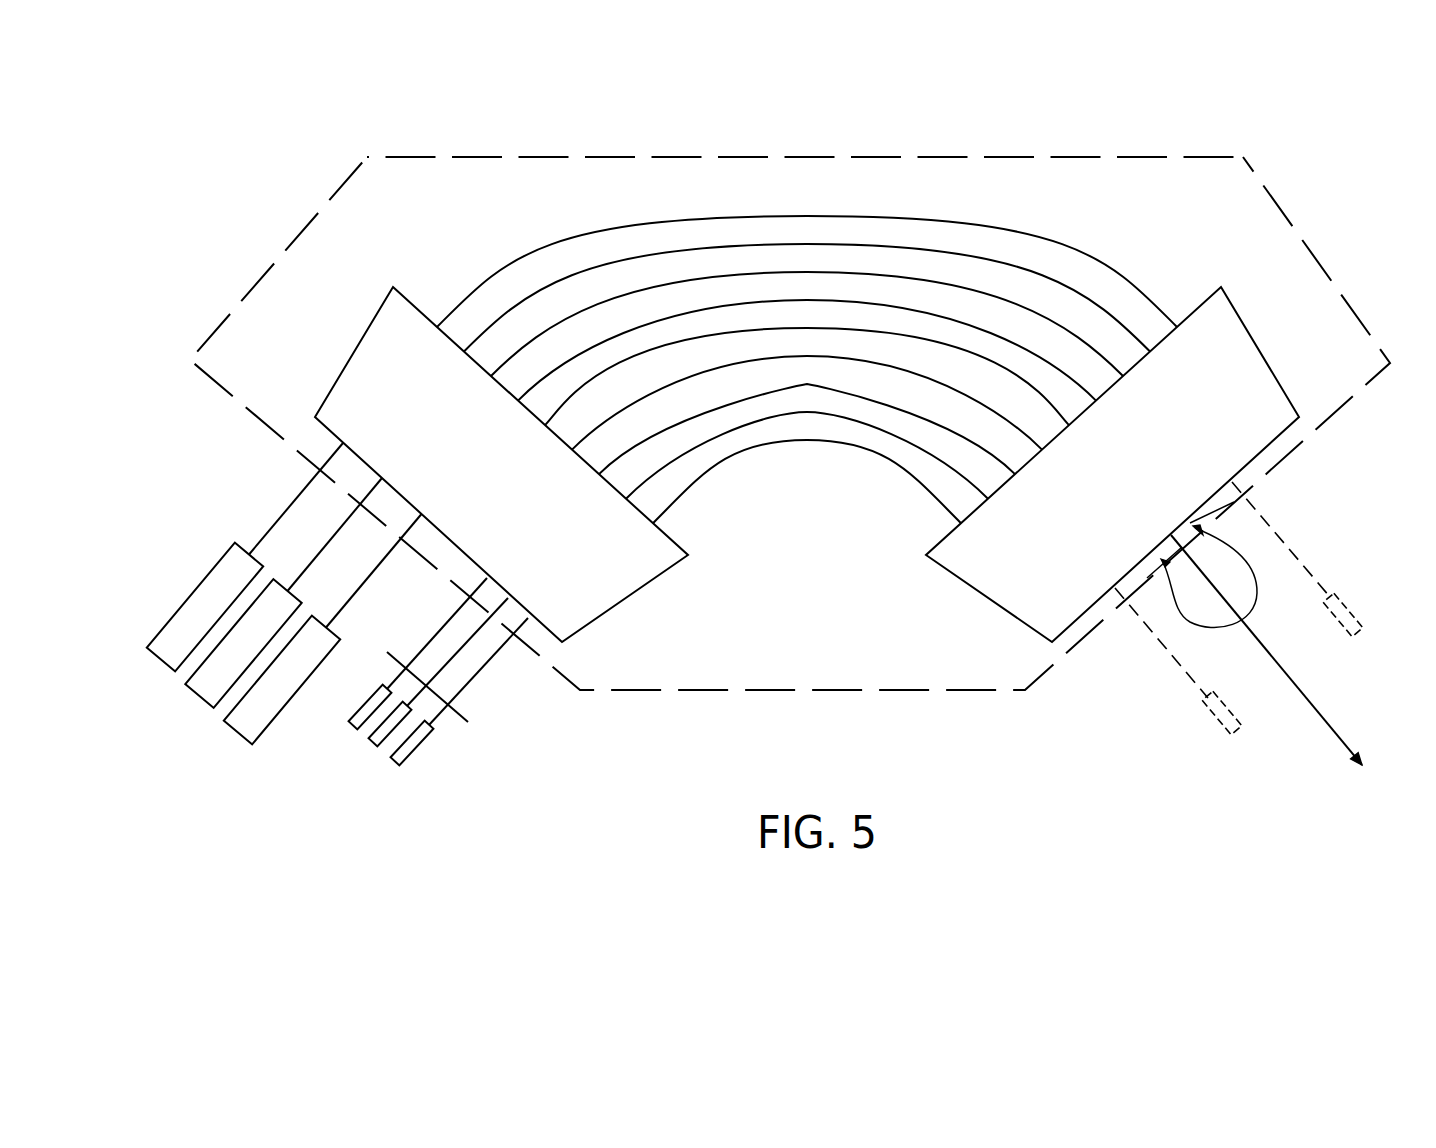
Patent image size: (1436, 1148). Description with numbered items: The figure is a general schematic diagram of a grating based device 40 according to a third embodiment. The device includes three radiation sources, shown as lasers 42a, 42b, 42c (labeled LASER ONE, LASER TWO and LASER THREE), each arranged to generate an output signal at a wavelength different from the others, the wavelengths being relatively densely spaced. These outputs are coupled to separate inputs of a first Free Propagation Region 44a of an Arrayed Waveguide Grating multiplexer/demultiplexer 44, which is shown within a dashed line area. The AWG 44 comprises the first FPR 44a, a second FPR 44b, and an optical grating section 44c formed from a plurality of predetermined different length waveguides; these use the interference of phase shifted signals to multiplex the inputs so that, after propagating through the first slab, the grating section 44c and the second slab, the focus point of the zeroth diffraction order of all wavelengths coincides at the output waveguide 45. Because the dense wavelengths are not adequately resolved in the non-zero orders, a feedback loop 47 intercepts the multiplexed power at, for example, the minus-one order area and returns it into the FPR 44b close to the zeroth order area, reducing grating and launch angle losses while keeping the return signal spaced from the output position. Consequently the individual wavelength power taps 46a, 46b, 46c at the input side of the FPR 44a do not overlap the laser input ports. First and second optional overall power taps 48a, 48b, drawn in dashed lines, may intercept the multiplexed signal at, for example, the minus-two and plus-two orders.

The grating based device 40 is at (510, 120).
The laser 42a is at (205, 575).
The laser 42b is at (283, 577).
The laser 42c is at (237, 727).
The Arrayed Waveguide Grating Multiplexer/Demultiplexer 44 is at (655, 157).
The first Free Propagation Region 44a is at (351, 357).
The second Free Propagation Region 44b is at (1267, 363).
The optical grating section 44c is at (830, 328).
The output waveguide 45 is at (1322, 705).
The individual wavelength optical tap 46a is at (350, 722).
The individual wavelength optical tap 46b is at (378, 747).
The individual wavelength optical tap 46c is at (427, 740).
The feedback loop 47 is at (1235, 617).
The first optional overall power tap 48a is at (1238, 733).
The second optional overall power tap 48b is at (1360, 635).